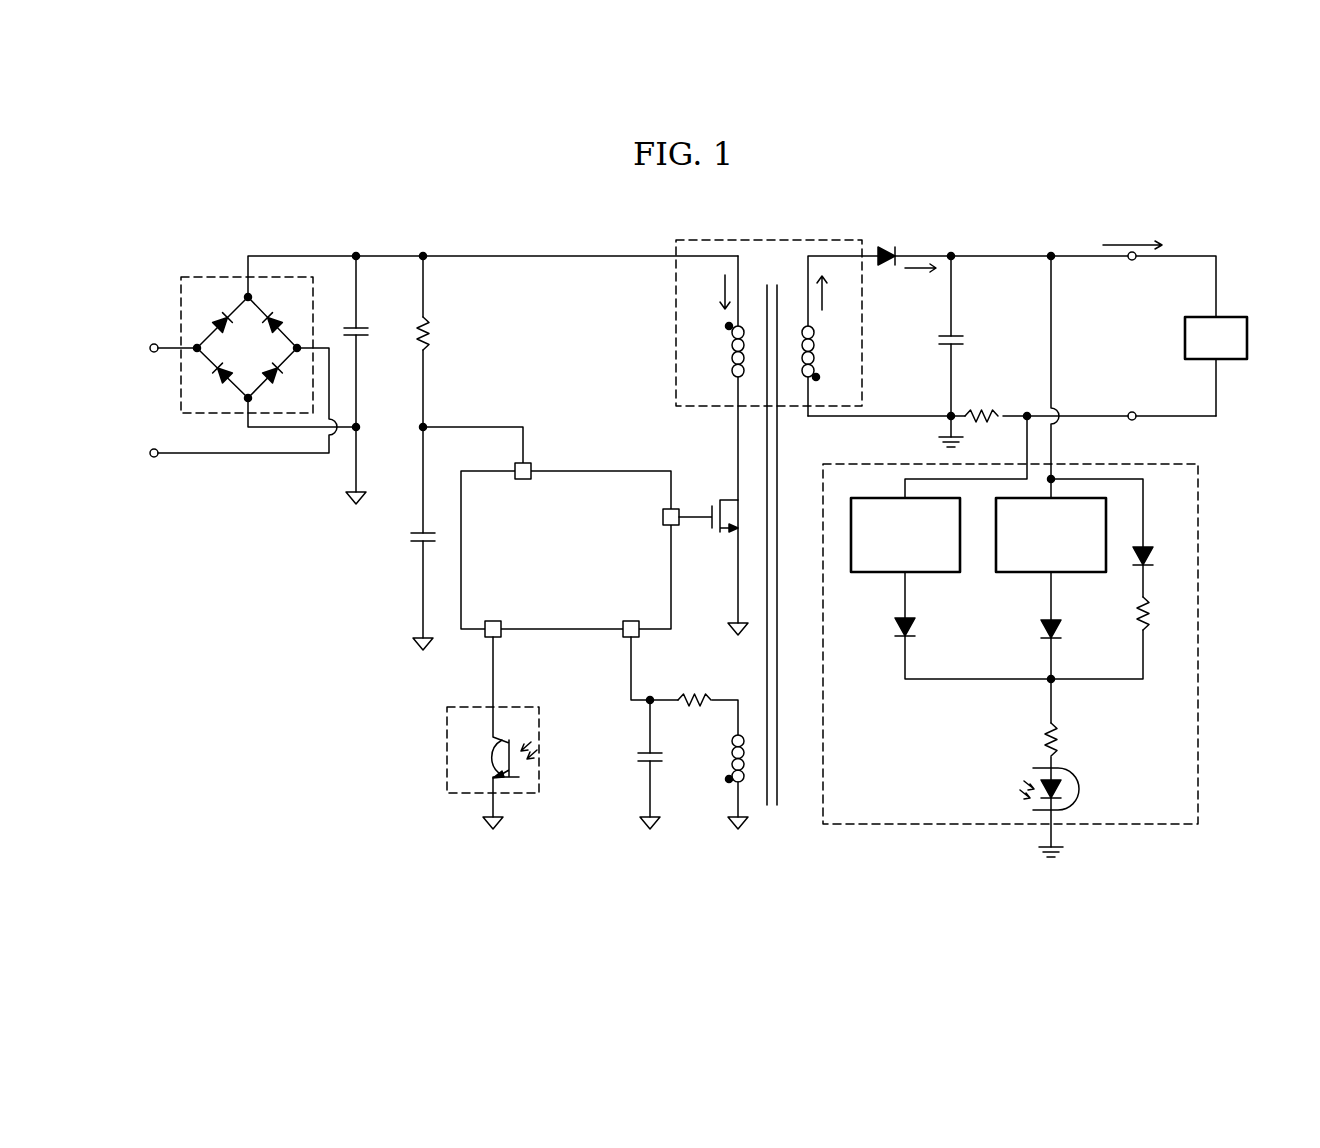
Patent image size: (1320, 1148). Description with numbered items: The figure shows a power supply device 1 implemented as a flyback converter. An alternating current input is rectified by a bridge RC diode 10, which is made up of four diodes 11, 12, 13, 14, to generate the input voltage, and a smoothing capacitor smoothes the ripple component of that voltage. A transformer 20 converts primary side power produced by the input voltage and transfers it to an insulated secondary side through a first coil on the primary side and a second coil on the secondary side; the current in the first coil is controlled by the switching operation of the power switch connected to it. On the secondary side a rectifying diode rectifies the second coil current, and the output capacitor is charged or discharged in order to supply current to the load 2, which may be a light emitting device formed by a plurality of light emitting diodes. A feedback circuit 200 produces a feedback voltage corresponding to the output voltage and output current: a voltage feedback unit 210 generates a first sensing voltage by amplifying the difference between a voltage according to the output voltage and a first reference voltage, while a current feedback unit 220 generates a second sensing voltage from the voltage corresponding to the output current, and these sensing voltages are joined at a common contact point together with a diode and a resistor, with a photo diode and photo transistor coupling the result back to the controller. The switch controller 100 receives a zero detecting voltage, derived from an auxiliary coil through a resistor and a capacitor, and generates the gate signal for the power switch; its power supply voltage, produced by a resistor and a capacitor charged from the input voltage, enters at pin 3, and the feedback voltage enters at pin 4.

The power supply device 1 is at (1187, 213).
The load 2 is at (1235, 317).
The pin 3 is at (526, 463).
The pin 4 is at (501, 637).
The bridge RC diode 10 is at (213, 276).
The diode 11 is at (221, 312).
The diode 12 is at (221, 384).
The diode 13 is at (283, 384).
The diode 14 is at (283, 312).
The transformer 20 is at (808, 240).
The switch controller 100 is at (593, 471).
The feedback circuit 200 is at (1198, 680).
The voltage feedback unit 210 is at (1018, 572).
The current feedback unit 220 is at (869, 572).